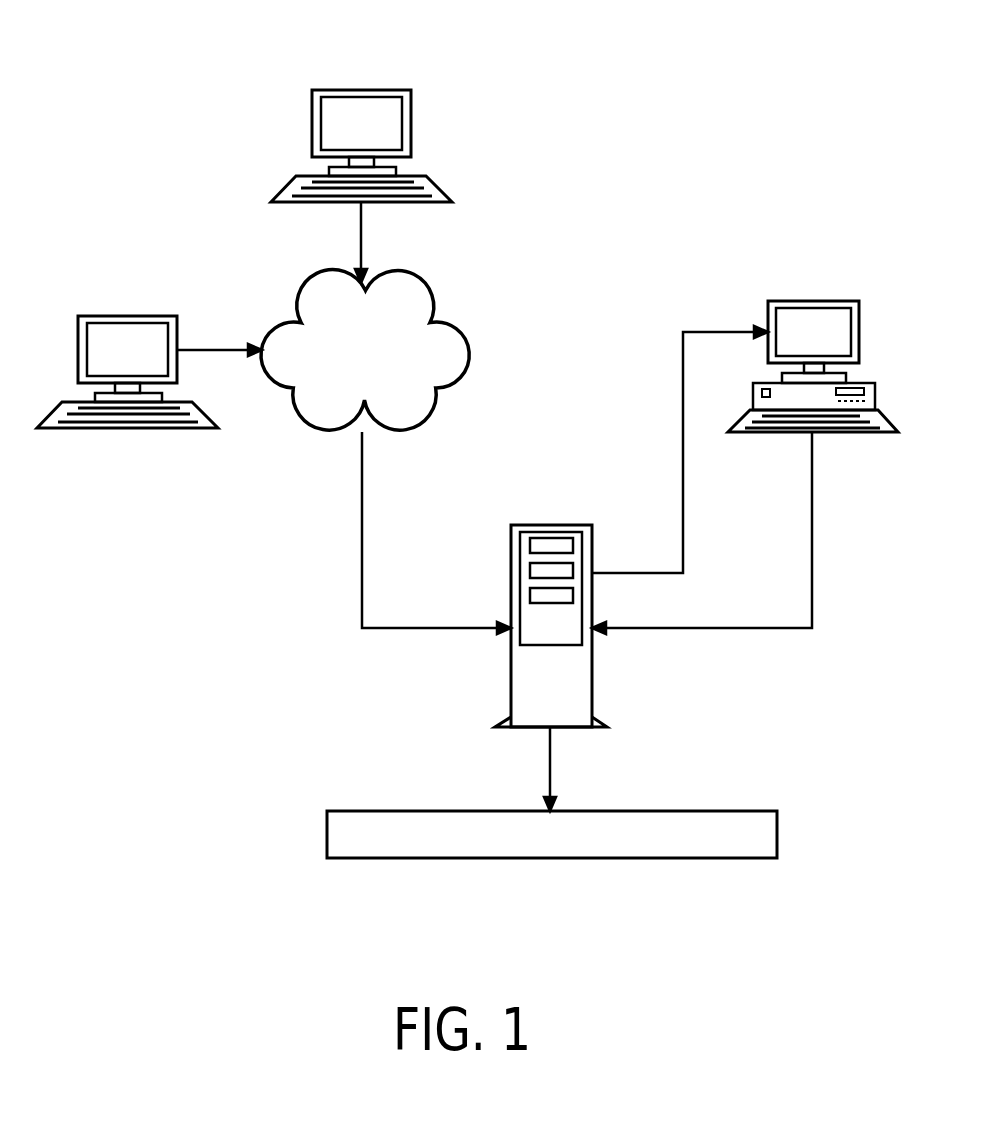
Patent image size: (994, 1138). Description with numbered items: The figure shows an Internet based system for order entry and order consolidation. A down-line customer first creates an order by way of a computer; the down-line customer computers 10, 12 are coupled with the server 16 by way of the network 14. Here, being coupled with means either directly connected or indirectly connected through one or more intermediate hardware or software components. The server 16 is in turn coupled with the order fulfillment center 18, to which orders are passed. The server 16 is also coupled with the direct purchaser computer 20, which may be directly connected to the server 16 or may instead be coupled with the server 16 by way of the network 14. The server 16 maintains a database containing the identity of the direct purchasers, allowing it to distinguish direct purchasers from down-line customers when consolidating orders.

The down-line customer computer 10 is at (120, 316).
The down-line customer computer 12 is at (350, 90).
The network 14 is at (467, 352).
The server 16 is at (511, 672).
The order fulfillment center 18 is at (327, 832).
The direct purchaser computer 20 is at (820, 301).